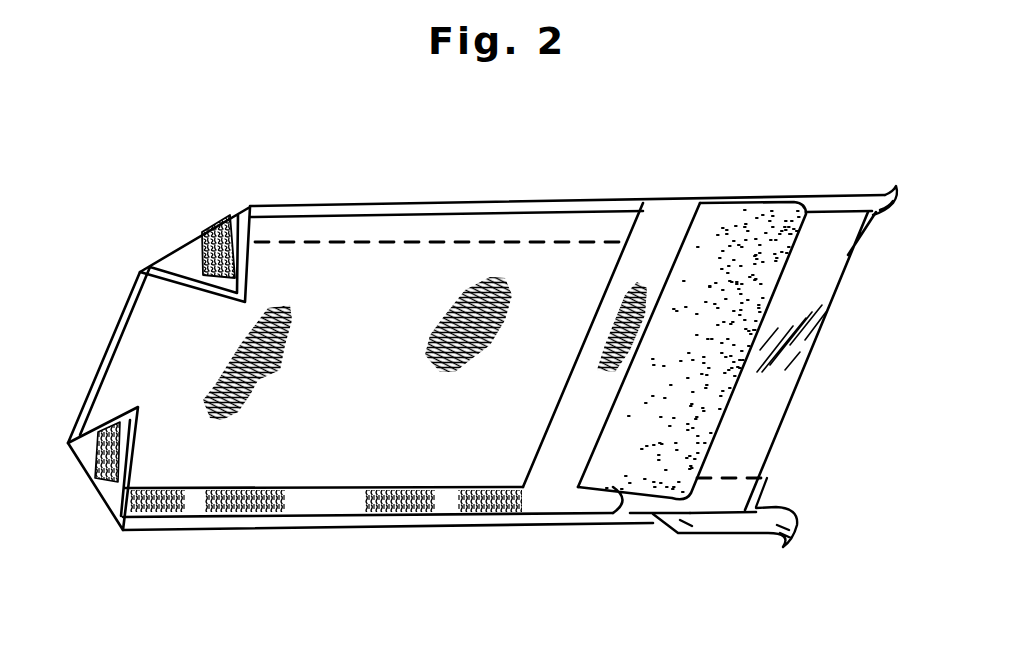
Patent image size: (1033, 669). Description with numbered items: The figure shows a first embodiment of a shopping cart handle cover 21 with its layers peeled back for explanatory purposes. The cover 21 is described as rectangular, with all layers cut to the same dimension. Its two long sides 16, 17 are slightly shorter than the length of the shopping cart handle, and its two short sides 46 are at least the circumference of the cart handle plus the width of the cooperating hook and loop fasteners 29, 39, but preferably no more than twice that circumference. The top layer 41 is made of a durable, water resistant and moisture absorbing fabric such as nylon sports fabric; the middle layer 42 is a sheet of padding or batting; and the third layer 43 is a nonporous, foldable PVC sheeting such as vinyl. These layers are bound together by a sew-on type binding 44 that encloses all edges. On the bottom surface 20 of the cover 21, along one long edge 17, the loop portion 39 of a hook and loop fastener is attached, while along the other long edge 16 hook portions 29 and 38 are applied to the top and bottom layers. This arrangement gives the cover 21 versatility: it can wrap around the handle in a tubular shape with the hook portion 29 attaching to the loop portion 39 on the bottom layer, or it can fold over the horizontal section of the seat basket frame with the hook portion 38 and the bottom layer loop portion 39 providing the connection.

The long side 16 is at (341, 553).
The long side 17 is at (513, 182).
The bottom surface 20 is at (179, 250).
The handle cover 21 is at (303, 143).
The hook portion 29 is at (457, 517).
The hook portion 38 is at (118, 490).
The loop portion 39 is at (873, 255).
The top layer 41 is at (571, 473).
The middle layer 42 is at (758, 219).
The third layer 43 is at (836, 229).
The sew-on type binding 44 is at (237, 534).
The short side 46 is at (95, 341).